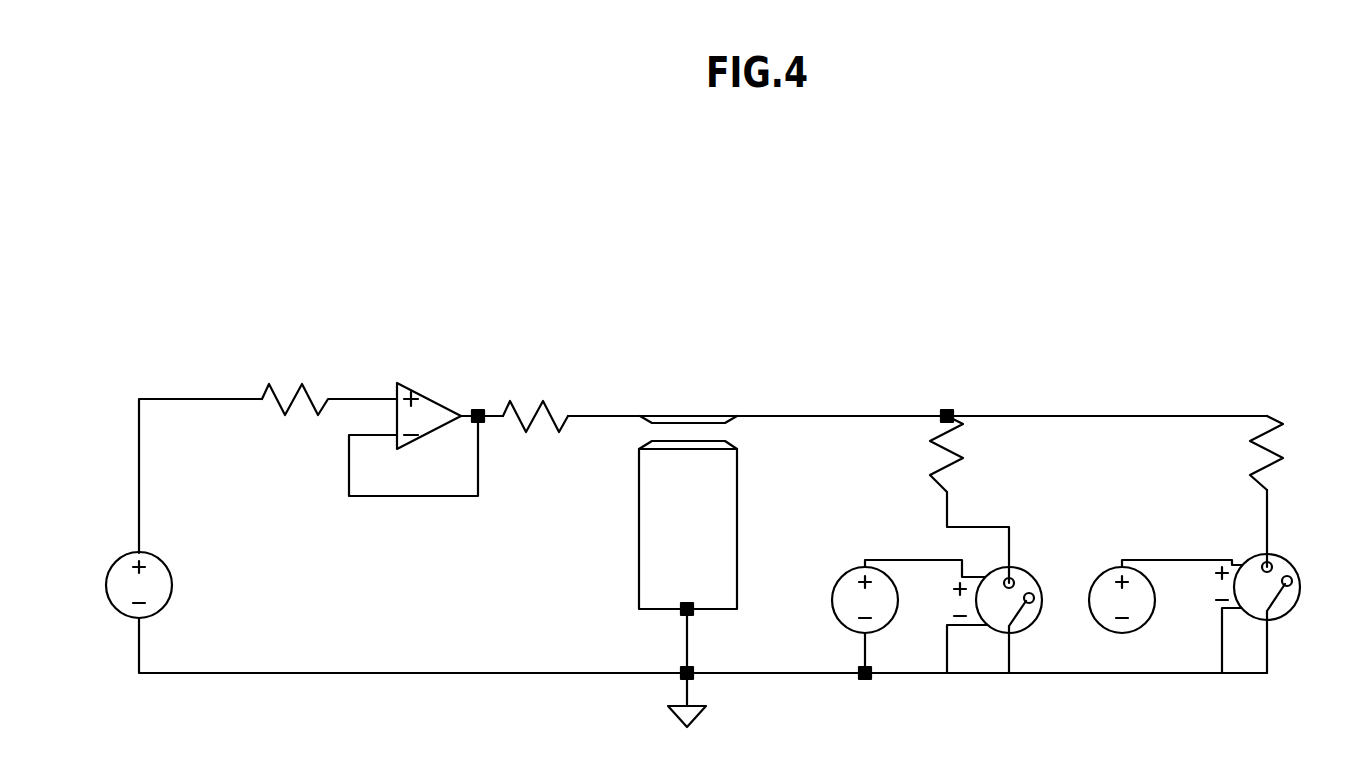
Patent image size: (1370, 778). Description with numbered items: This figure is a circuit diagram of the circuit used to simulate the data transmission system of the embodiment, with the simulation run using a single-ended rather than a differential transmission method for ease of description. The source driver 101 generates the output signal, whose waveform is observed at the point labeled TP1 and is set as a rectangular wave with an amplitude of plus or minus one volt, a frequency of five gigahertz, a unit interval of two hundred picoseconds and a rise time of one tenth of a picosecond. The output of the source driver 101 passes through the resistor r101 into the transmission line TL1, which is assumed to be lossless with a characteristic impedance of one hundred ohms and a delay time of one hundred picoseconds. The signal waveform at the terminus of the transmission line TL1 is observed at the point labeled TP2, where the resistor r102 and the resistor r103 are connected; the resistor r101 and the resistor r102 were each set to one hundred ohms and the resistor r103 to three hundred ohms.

The source driver 101 is at (425, 397).
The output signal of the source driver TP1 is at (480, 411).
The signal waveform at the terminus of the transmission line TP2 is at (947, 411).
The resistor r101 is at (535, 407).
The resistor r102 is at (974, 454).
The resistor r103 is at (1293, 453).
The transmission line TL1 is at (688, 556).